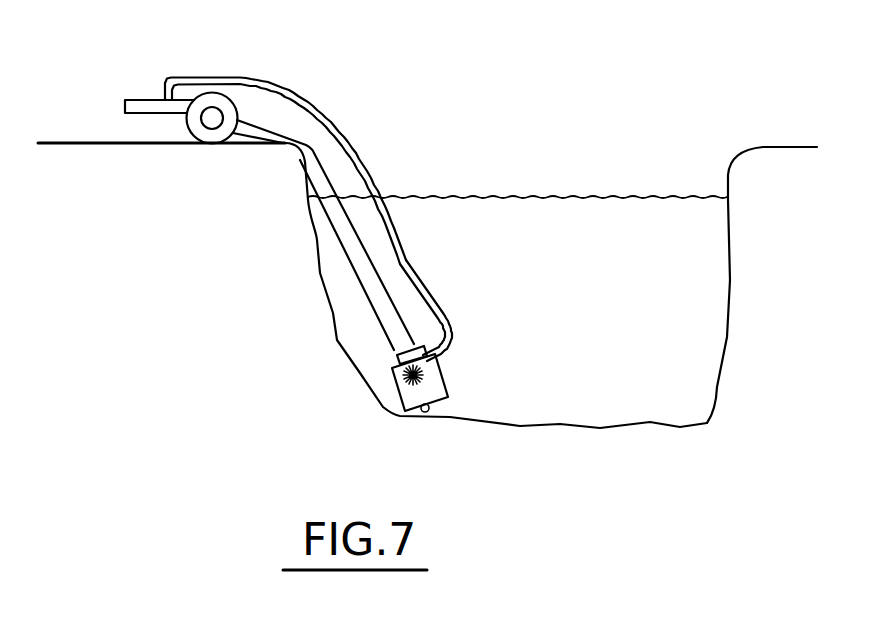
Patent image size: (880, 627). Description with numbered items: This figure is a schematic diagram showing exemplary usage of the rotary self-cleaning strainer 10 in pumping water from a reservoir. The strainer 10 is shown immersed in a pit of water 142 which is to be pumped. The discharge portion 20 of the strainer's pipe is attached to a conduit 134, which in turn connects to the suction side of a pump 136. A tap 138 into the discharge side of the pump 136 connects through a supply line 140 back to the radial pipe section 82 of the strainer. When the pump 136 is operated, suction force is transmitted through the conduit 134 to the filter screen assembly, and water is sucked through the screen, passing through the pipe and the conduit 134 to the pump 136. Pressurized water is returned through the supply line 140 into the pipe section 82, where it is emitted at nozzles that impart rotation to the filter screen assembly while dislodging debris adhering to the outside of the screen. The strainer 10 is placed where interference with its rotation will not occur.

The rotary self-cleaning strainer 10 is at (448, 375).
The discharge portion 20 is at (394, 367).
The radial pipe section 82 is at (424, 343).
The conduit 134 is at (368, 283).
The pump 136 is at (212, 138).
The tap 138 is at (162, 90).
The supply line 140 is at (347, 128).
The pit of water 142 is at (562, 217).